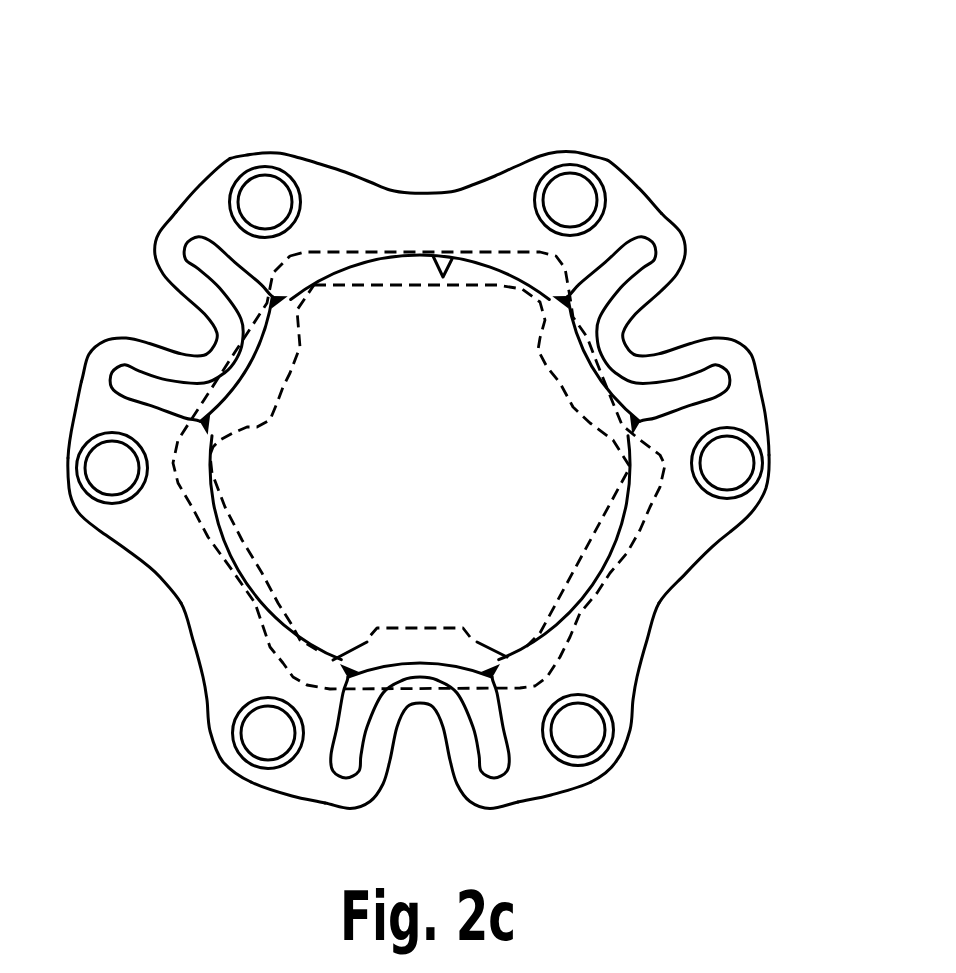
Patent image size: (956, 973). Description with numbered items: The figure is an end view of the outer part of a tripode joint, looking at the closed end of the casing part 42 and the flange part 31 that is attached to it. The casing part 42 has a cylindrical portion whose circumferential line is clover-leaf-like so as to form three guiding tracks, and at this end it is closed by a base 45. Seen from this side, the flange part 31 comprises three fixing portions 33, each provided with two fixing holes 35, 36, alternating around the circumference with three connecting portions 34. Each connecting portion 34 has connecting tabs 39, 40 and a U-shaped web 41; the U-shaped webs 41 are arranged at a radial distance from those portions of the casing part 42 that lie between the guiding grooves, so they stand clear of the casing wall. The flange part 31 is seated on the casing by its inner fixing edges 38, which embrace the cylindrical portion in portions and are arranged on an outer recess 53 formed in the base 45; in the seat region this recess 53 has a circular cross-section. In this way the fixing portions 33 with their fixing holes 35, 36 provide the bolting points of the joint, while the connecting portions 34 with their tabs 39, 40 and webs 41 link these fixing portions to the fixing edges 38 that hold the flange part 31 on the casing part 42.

The flange part 31 is at (457, 404).
The fixing portion 33 is at (335, 152).
The connecting portion 34 is at (697, 287).
The fixing hole 35 is at (570, 192).
The fixing hole 36 is at (262, 198).
The inner fixing edge 38 is at (437, 256).
The connecting tab 39 is at (741, 370).
The connecting tab 40 is at (702, 270).
The U-shaped web 41 is at (622, 360).
The casing part 42 is at (238, 293).
The base 45 is at (403, 375).
The outer recess 53 is at (494, 262).